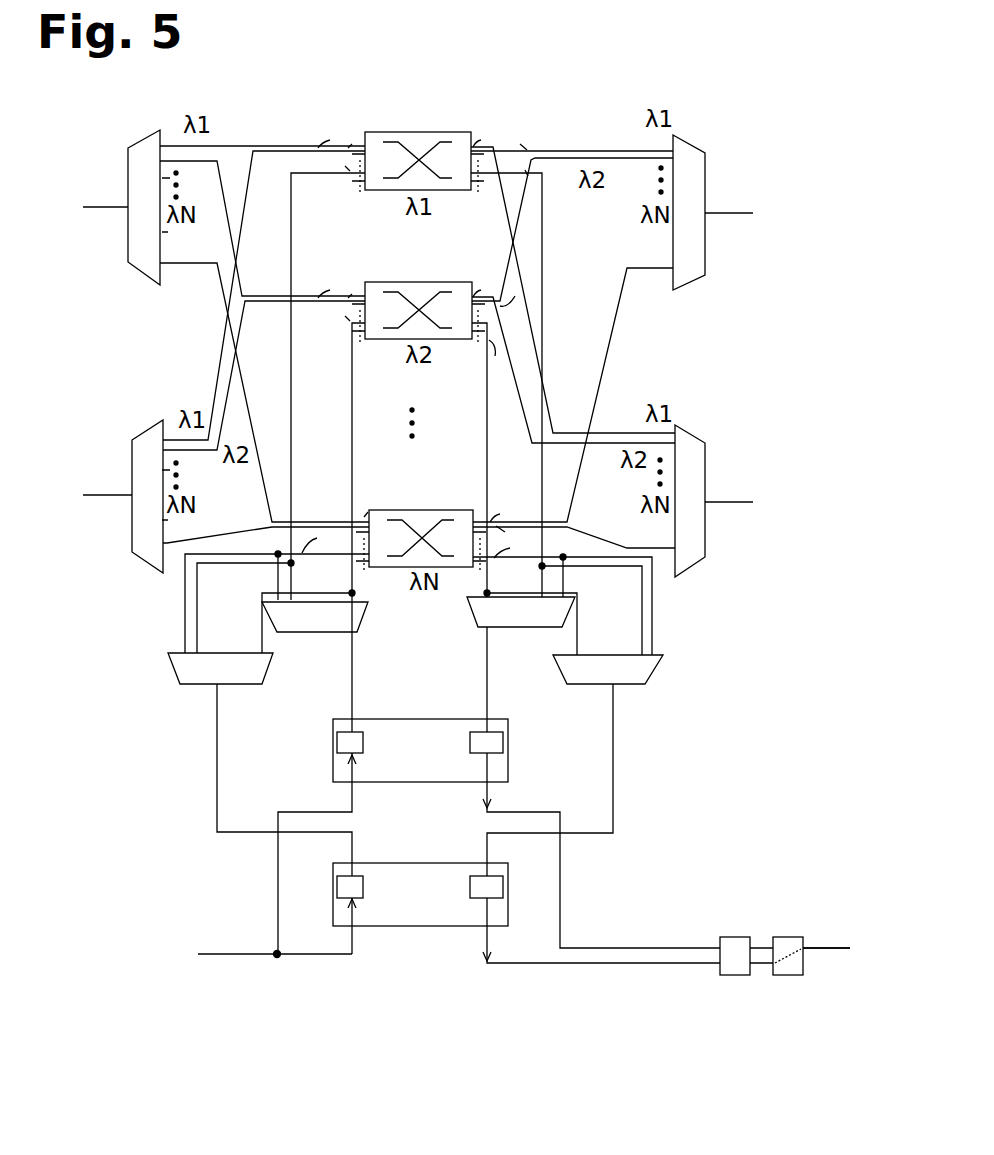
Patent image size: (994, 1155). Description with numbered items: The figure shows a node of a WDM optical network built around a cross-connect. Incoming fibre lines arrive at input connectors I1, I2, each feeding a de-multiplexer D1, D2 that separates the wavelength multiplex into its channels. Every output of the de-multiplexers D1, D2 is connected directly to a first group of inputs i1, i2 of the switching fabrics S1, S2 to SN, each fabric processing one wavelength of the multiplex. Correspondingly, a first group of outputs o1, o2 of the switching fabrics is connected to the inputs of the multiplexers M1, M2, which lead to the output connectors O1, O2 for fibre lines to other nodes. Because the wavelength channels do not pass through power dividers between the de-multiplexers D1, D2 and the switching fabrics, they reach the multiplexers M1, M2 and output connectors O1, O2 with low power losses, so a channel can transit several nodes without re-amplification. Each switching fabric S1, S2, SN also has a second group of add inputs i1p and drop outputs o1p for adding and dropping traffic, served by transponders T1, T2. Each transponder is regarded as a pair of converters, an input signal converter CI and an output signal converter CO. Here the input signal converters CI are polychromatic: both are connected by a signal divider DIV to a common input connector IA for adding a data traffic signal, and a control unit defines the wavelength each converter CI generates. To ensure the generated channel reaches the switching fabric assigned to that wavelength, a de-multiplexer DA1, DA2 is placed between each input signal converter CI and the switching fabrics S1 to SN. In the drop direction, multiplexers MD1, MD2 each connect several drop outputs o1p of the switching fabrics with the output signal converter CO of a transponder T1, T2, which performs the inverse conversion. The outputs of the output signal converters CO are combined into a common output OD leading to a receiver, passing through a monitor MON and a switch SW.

The de-multiplexer D1 is at (143, 155).
The de-multiplexer D2 is at (146, 481).
The input connector I1 is at (103, 207).
The input connector I2 is at (115, 495).
The switching fabric S1 is at (388, 136).
The switching fabric S2 is at (425, 292).
The switching fabric SN is at (374, 511).
The multiplexer M1 is at (690, 155).
The multiplexer M2 is at (690, 448).
The output connector O1 is at (717, 213).
The output connector O2 is at (727, 502).
The de-multiplexer DA1 is at (353, 612).
The de-multiplexer DA2 is at (188, 680).
The multiplexer MD1 is at (510, 617).
The multiplexer MD2 is at (648, 675).
The transponder T1 is at (420, 750).
The transponder T2 is at (420, 894).
The input signal converter CI is at (363, 741).
The output signal converter CO is at (470, 741).
The common input connector IA is at (230, 954).
The signal divider DIV is at (275, 958).
The monitor MON is at (753, 928).
The switch SW is at (797, 963).
The common output OD is at (832, 948).
The first-group input i1 is at (358, 322).
The first-group input i2 is at (330, 213).
The add input i1p is at (326, 356).
The first-group output o1 is at (495, 327).
The first-group output o2 is at (511, 336).
The drop output o1p is at (509, 359).